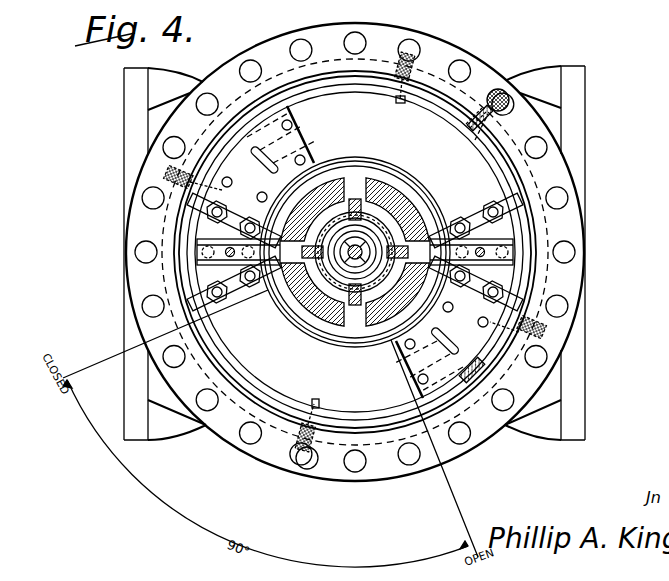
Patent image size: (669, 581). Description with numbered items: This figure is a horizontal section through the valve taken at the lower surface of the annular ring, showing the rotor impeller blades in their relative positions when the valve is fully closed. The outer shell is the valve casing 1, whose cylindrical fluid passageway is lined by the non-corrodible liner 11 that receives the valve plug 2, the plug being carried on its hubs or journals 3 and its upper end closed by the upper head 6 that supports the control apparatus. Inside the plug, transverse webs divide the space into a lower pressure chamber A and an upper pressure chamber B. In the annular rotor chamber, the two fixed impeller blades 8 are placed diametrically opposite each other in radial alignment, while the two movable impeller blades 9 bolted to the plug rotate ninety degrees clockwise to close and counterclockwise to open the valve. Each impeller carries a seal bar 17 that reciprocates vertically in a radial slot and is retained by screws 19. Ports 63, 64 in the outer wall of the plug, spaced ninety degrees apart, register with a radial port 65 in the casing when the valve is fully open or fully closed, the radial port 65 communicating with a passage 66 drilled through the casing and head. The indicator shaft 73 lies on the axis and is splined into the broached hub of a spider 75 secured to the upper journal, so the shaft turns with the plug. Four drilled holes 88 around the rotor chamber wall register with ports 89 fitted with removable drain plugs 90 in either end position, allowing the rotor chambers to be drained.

The valve casing 1 is at (430, 70).
The valve plug 2 is at (284, 312).
The hubs or journals 3 is at (256, 302).
The upper head 6 is at (507, 78).
The fixed impeller blades 8 is at (300, 112).
The movable impeller blades 9 is at (452, 230).
The liner 11 is at (217, 358).
The seal bar 17 is at (512, 248).
The screws 19 is at (495, 263).
The port 63 is at (475, 142).
The port 64 is at (485, 372).
The radial port 65 is at (466, 124).
The passage 66 is at (498, 110).
The indicator shaft 73 is at (368, 248).
The spider 75 is at (365, 275).
The drilled holes 88 is at (232, 182).
The ports 89 is at (200, 176).
The drain plugs 90 is at (185, 185).
The lower pressure chamber A is at (312, 320).
The upper pressure chamber B is at (397, 182).